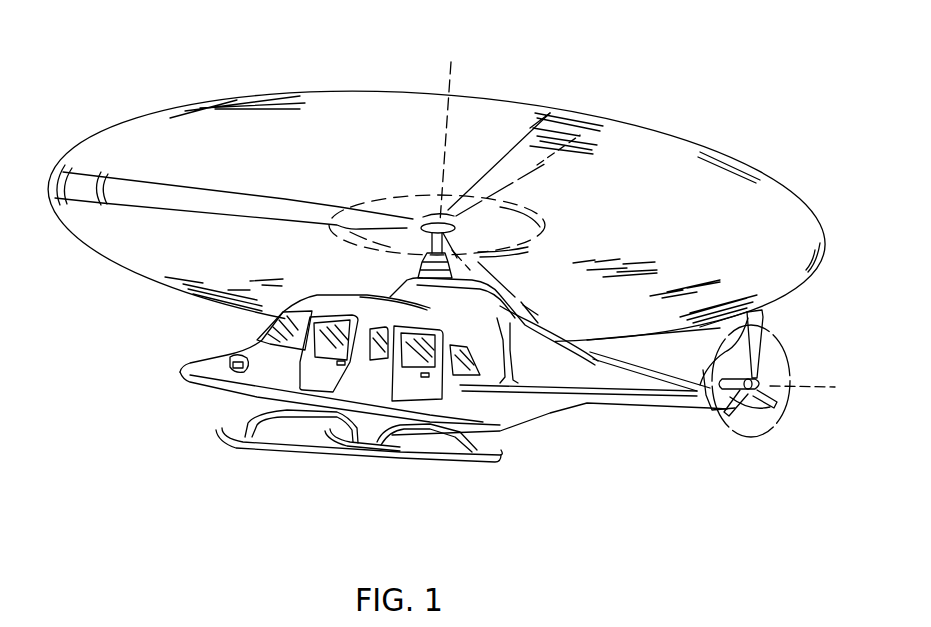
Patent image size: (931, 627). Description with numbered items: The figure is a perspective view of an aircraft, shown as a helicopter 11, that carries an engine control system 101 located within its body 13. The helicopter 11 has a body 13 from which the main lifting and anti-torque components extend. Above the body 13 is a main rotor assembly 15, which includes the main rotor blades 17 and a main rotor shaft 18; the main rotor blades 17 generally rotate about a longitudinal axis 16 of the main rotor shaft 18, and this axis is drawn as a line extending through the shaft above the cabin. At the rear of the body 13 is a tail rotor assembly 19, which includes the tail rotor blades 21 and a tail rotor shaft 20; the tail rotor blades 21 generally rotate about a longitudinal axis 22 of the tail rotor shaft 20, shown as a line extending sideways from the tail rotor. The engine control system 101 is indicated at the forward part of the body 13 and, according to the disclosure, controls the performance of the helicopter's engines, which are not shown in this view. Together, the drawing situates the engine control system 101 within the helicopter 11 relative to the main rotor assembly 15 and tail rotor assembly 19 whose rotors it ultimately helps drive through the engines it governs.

The helicopter 11 is at (603, 87).
The body 13 is at (210, 387).
The main rotor assembly 15 is at (493, 263).
The longitudinal axis 16 is at (443, 138).
The main rotor blades 17 is at (183, 190).
The main rotor shaft 18 is at (427, 245).
The tail rotor assembly 19 is at (770, 445).
The tail rotor shaft 20 is at (731, 430).
The tail rotor blades 21 is at (787, 347).
The longitudinal axis 22 is at (818, 390).
The engine control system 101 is at (237, 353).